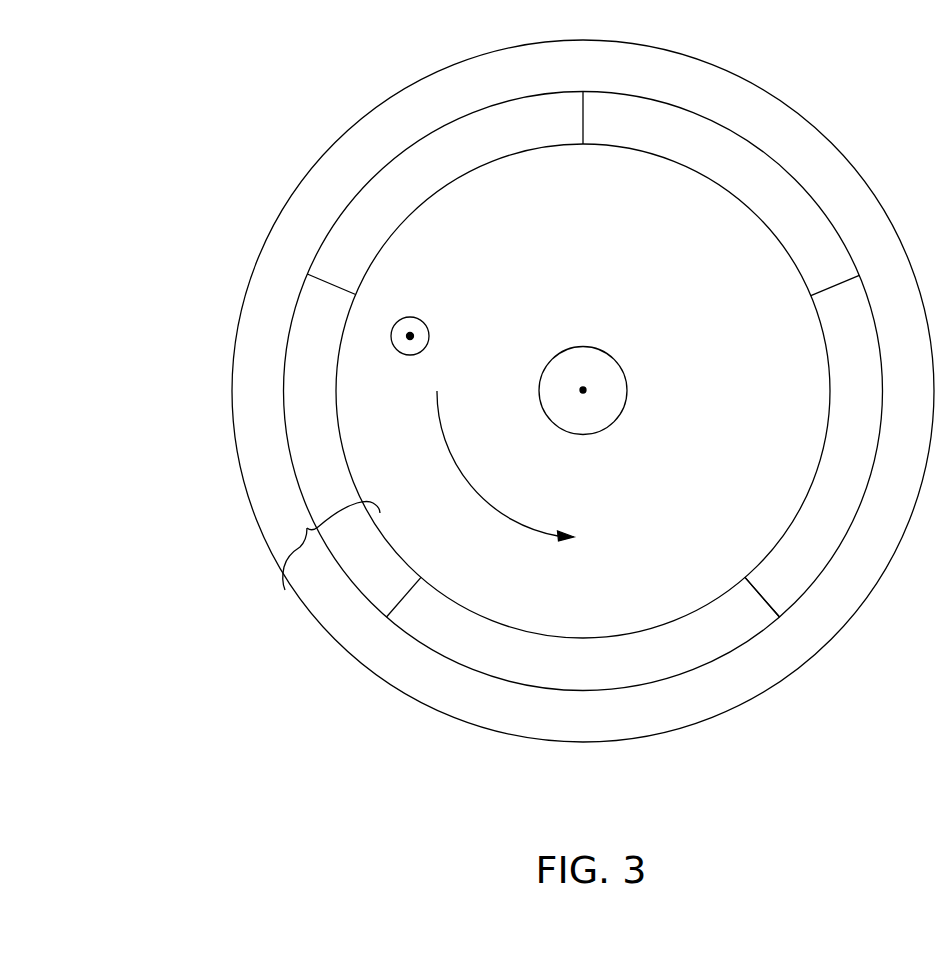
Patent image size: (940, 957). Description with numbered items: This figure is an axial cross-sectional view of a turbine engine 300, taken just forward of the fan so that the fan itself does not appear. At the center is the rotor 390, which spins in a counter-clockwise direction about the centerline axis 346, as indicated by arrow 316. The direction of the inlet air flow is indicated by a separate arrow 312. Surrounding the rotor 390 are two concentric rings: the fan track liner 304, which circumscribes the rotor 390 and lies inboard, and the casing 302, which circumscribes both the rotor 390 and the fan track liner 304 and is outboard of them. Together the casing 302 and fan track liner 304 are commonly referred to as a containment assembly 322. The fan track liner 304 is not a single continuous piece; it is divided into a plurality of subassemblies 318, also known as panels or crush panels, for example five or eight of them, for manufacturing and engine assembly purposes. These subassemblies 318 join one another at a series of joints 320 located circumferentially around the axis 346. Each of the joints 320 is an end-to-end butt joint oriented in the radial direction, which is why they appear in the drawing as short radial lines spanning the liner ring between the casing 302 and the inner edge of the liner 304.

The turbine engine 300 is at (224, 85).
The casing 302 is at (798, 129).
The fan track liner 304 is at (523, 194).
The arrow (inlet air flow direction) 312 is at (402, 347).
The arrow (rotor rotation direction) 316 is at (524, 469).
The subassemblies 318 is at (599, 679).
The joints 320 is at (754, 617).
The containment assembly 322 is at (307, 528).
The centerline axis 346 is at (604, 381).
The rotor 390 is at (639, 420).